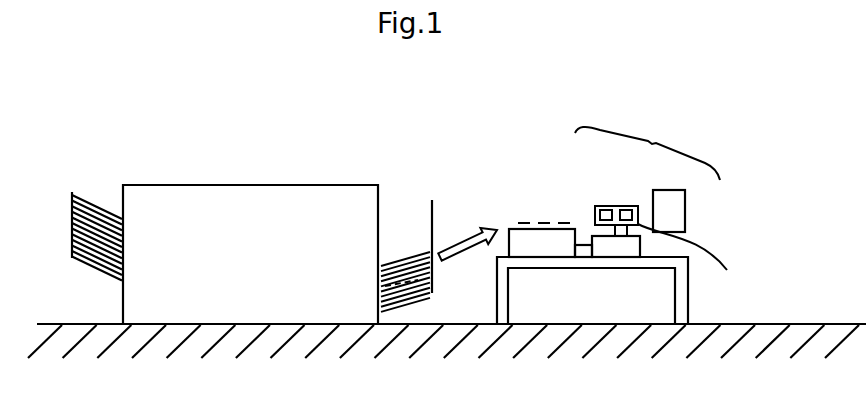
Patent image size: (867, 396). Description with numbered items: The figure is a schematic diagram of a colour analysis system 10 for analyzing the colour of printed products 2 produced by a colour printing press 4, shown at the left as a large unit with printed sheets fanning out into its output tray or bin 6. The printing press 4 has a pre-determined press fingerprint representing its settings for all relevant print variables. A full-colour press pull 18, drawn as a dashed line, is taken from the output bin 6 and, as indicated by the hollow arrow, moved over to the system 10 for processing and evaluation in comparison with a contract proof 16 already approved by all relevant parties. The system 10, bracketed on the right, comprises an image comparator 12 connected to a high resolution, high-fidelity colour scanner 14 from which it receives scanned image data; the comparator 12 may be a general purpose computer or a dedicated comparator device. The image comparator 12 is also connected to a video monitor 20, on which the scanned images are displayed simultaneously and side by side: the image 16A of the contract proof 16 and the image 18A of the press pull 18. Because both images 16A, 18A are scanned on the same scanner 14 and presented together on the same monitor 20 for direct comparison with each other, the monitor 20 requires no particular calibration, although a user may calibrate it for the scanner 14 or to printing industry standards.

The printed products 2 is at (401, 222).
The colour printing press 4 is at (215, 185).
The output tray or bin 6 is at (434, 225).
The colour analysis system 10 is at (653, 126).
The image comparator 12 is at (610, 247).
The colour scanner 14 is at (537, 248).
The contract proof 16 is at (685, 202).
The image of proof 16A is at (597, 207).
The press pull 18 is at (418, 280).
The image of press pull 18A is at (638, 207).
The video monitor 20 is at (695, 258).